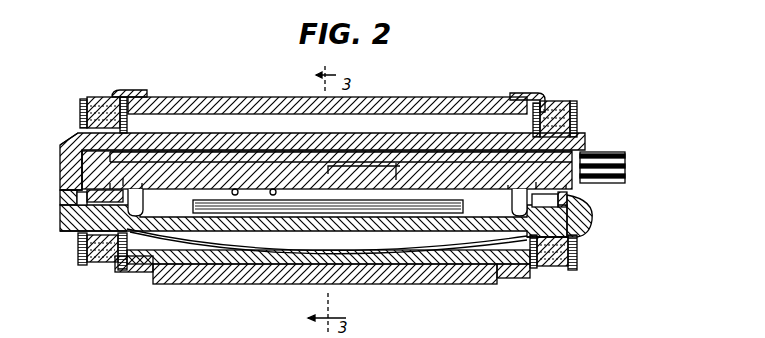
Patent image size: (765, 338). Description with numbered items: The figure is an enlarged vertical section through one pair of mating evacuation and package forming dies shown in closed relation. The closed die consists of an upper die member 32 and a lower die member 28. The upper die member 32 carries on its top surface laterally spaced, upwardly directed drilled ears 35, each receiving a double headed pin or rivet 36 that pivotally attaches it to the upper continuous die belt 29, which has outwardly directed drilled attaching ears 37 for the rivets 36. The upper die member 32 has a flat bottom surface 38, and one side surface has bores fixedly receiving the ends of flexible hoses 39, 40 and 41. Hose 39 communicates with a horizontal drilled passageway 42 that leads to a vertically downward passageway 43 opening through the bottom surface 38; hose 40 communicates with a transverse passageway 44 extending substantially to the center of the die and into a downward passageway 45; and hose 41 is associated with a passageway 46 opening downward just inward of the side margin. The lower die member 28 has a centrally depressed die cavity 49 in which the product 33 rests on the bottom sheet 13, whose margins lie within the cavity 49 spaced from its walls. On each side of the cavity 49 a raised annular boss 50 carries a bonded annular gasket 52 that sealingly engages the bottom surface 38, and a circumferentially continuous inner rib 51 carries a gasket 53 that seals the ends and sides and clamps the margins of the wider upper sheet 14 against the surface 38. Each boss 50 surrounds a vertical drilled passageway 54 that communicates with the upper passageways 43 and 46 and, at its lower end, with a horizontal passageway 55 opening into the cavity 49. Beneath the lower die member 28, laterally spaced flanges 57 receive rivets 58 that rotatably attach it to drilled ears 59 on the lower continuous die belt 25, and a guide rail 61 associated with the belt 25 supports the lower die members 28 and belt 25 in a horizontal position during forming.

The bottom sheet 13 is at (173, 185).
The upper sheet 14 is at (275, 189).
The lower continuous die belt 25 is at (172, 249).
The lower die member 28 is at (593, 225).
The upper continuous die belt 29 is at (291, 97).
The upper die member 32 is at (426, 138).
The product 33 is at (466, 210).
The drilled ears 35 is at (110, 96).
The double headed pin or rivet 36 is at (80, 108).
The attaching ears 37 is at (124, 92).
The bottom surface 38 is at (238, 189).
The flexible hose 39 is at (618, 152).
The flexible hose 40 is at (626, 157).
The flexible hose 41 is at (626, 168).
The drilled passageway 42 is at (378, 152).
The drilled passageway 43 is at (70, 140).
The drilled passageway 44 is at (396, 170).
The drilled passageway 45 is at (328, 174).
The drilled passageway 46 is at (566, 189).
The die cavity 49 is at (142, 184).
The raised annular boss 50 is at (68, 195).
The inner rib 51 is at (110, 184).
The annular gasket 52 is at (88, 193).
The gasket 53 is at (122, 177).
The drilled passageway 54 is at (77, 198).
The drilled passageway 55 is at (65, 212).
The flanges 57 is at (140, 271).
The double headed pin or rivet 58 is at (78, 247).
The drilled ears 59 is at (98, 266).
The guide rail 61 is at (436, 284).